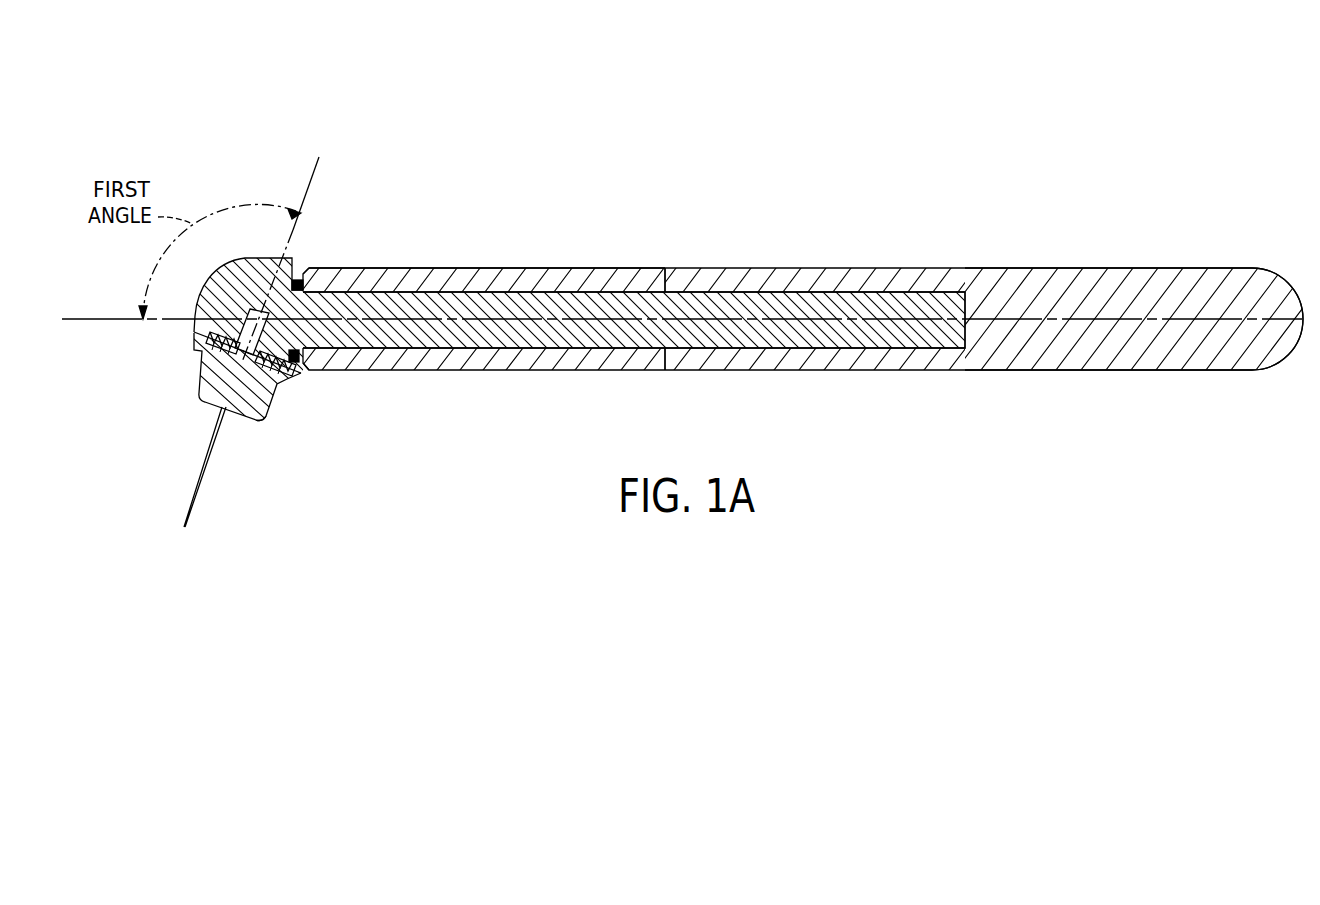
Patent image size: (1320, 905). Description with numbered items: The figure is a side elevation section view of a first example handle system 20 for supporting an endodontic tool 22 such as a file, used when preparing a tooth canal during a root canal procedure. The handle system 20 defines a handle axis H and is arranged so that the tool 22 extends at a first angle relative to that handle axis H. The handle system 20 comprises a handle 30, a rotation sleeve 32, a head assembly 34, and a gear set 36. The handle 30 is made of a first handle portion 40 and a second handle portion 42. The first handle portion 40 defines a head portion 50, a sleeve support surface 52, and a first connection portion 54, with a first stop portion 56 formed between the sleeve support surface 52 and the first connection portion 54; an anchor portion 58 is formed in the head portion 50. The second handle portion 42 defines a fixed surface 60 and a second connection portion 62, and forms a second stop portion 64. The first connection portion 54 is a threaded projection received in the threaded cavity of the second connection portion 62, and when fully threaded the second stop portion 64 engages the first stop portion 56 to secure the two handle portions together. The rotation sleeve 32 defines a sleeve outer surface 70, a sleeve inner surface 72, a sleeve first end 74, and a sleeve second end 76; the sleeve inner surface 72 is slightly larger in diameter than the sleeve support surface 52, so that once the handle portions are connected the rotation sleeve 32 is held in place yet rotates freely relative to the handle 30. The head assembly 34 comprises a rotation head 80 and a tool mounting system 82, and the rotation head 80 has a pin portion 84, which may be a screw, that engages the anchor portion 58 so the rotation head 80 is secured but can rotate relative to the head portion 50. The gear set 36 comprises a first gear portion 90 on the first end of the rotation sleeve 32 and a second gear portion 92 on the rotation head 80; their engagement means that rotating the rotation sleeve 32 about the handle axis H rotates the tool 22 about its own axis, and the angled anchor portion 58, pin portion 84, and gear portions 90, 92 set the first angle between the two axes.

The handle system 20 is at (1188, 87).
The endodontic tool 22 is at (203, 462).
The handle 30 is at (1070, 158).
The rotation sleeve 32 is at (619, 268).
The head assembly 34 is at (281, 431).
The gear set 36 is at (306, 395).
The first handle portion 40 is at (527, 337).
The second handle portion 42 is at (1105, 372).
The head portion 50 is at (234, 317).
The sleeve support surface 52 is at (458, 292).
The first connection portion 54 is at (873, 327).
The first stop portion 56 is at (677, 353).
The anchor portion 58 is at (300, 270).
The fixed surface 60 is at (1117, 268).
The second connection portion 62 is at (828, 302).
The second stop portion 64 is at (668, 278).
The sleeve outer surface 70 is at (558, 268).
The sleeve inner surface 72 is at (433, 340).
The sleeve first end 74 is at (331, 251).
The sleeve second end 76 is at (702, 254).
The rotation head 80 is at (203, 382).
The tool mounting system 82 is at (258, 428).
The pin portion 84 is at (268, 253).
The first gear portion 90 is at (203, 345).
The second gear portion 92 is at (289, 378).
The handle axis H is at (1160, 318).